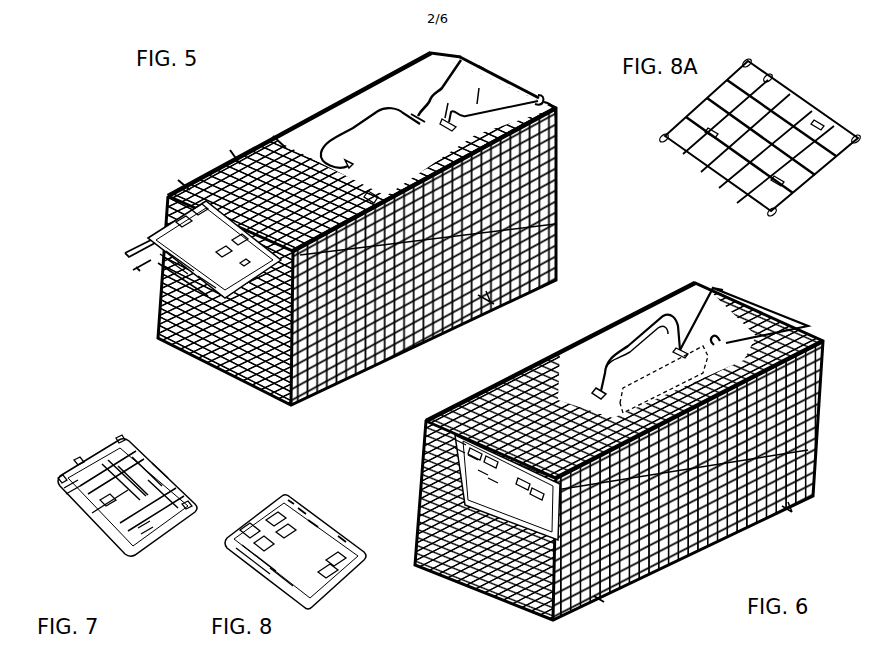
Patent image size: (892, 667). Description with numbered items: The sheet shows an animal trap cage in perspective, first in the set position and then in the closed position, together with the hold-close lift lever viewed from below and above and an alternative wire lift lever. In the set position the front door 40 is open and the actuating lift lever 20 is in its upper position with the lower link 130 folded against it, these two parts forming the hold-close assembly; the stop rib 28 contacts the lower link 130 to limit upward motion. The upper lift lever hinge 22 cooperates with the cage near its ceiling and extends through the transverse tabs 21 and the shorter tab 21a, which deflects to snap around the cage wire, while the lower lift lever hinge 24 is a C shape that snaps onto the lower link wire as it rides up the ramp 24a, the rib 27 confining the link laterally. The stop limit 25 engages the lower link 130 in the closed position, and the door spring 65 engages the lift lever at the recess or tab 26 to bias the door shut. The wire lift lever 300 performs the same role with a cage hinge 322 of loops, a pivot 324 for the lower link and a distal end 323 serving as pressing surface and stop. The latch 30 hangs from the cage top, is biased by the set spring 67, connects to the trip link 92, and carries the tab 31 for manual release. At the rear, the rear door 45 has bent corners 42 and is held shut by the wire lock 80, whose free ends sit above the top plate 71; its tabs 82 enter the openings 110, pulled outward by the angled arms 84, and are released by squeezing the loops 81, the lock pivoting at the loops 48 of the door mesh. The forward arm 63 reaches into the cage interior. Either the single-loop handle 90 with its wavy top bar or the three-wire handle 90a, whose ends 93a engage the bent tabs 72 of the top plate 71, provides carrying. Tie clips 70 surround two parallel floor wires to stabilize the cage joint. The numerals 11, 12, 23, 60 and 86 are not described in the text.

In FIG. 6, the cage top wall 11 is at (422, 430).
In FIG. 6, the cage front frame 12 is at (418, 418).
In FIG. 5, the actuating lift lever 20 is at (162, 187).
In FIG. 6, the actuating lift lever 20 is at (440, 470).
In FIG. 7, the actuating lift lever 20 is at (93, 530).
In FIG. 8, the actuating lift lever 20 is at (258, 492).
In FIG. 6, the transverse tabs 21 is at (450, 440).
In FIG. 7, the transverse tabs 21 is at (137, 447).
In FIG. 8, the transverse tabs 21 is at (283, 495).
In FIG. 6, the transverse tab 21a is at (463, 450).
In FIG. 7, the transverse tab 21a is at (148, 472).
In FIG. 8, the transverse tab 21a is at (302, 515).
In FIG. 5, the upper lift lever hinge 22 is at (175, 177).
In FIG. 7, the upper lift lever hinge 22 is at (177, 500).
In FIG. 5, the door lower rail 23 is at (152, 257).
In FIG. 7, the door lower rail 23 is at (90, 512).
In FIG. 8, the door lower rail 23 is at (253, 560).
In FIG. 7, the lower lift lever hinge 24 is at (57, 483).
In FIG. 8, the lower lift lever hinge 24 is at (243, 522).
In FIG. 7, the ramp 24a is at (98, 497).
In FIG. 7, the stop limit 25 is at (52, 472).
In FIG. 7, the recess or tab 26 is at (150, 462).
In FIG. 8, the recess or tab 26 is at (272, 568).
In FIG. 5, the rib 27 is at (192, 347).
In FIG. 7, the rib 27 is at (70, 453).
In FIG. 7, the stop rib 28 is at (110, 430).
In FIG. 5, the latch 30 is at (243, 142).
In FIG. 6, the latch 30 is at (687, 546).
In FIG. 5, the tab 31 is at (272, 133).
In FIG. 5, the front door 40 is at (143, 252).
In FIG. 5, the bent corners 42 is at (560, 110).
In FIG. 5, the rear door 45 is at (555, 137).
In FIG. 5, the loops 48 is at (475, 60).
In FIG. 6, the bottom frame clip 60 is at (780, 502).
In FIG. 6, the forward arm 63 is at (753, 510).
In FIG. 5, the door spring 65 is at (227, 150).
In FIG. 5, the set spring 67 is at (367, 187).
In FIG. 5, the tie clip 70 is at (477, 292).
In FIG. 5, the top plate 71 is at (332, 122).
In FIG. 6, the top plate 71 is at (583, 352).
In FIG. 5, the bent tabs 72 is at (343, 155).
In FIG. 6, the bent tabs 72 is at (593, 385).
In FIG. 5, the lock 80 is at (530, 88).
In FIG. 5, the loops 81 is at (468, 84).
In FIG. 5, the tabs 82 is at (446, 122).
In FIG. 5, the angled arms 84 is at (480, 100).
In FIG. 5, the trigger rod 86 is at (490, 67).
In FIG. 5, the handle 90 is at (347, 118).
In FIG. 6, the handle 90a is at (640, 368).
In FIG. 5, the trip link 92 is at (547, 217).
In FIG. 6, the ends 93a is at (668, 347).
In FIG. 5, the openings 110 is at (407, 100).
In FIG. 5, the lower link 130 is at (150, 222).
In FIG. 6, the lower link 130 is at (593, 592).
In FIG. 8A, the wire lift lever 300 is at (717, 182).
In FIG. 8A, the cage hinge 322 is at (767, 73).
In FIG. 8A, the distal end 323 is at (707, 162).
In FIG. 8A, the pivot 324 is at (772, 172).